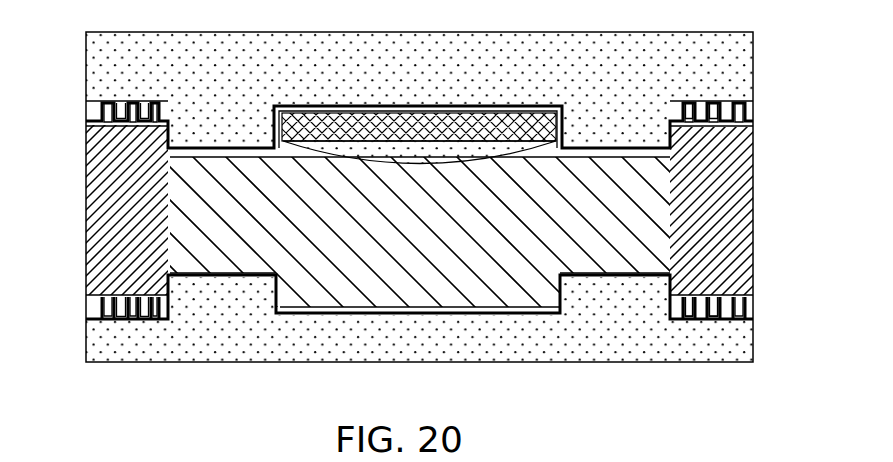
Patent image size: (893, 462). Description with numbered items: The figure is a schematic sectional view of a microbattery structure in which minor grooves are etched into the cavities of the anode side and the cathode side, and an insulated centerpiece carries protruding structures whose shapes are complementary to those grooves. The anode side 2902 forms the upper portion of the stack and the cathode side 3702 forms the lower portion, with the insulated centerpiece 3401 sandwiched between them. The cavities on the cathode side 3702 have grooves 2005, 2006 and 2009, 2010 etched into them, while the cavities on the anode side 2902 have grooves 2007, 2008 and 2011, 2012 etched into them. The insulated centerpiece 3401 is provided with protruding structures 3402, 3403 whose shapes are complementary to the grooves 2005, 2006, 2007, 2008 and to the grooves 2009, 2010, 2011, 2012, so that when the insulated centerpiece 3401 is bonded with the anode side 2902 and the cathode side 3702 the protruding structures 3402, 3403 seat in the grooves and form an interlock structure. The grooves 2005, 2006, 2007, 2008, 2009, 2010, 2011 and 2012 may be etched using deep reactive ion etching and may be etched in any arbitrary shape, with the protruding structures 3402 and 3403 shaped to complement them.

The groove 2005 is at (717, 318).
The groove 2006 is at (692, 318).
The groove 2007 is at (717, 112).
The groove 2008 is at (691, 113).
The groove 2009 is at (122, 318).
The groove 2010 is at (147, 318).
The groove 2011 is at (122, 113).
The groove 2012 is at (146, 112).
The anode side 2902 is at (440, 78).
The insulated centerpiece 3401 is at (733, 232).
The protruding structure 3402 is at (105, 294).
The protruding structure 3403 is at (107, 121).
The cathode side 3702 is at (442, 357).